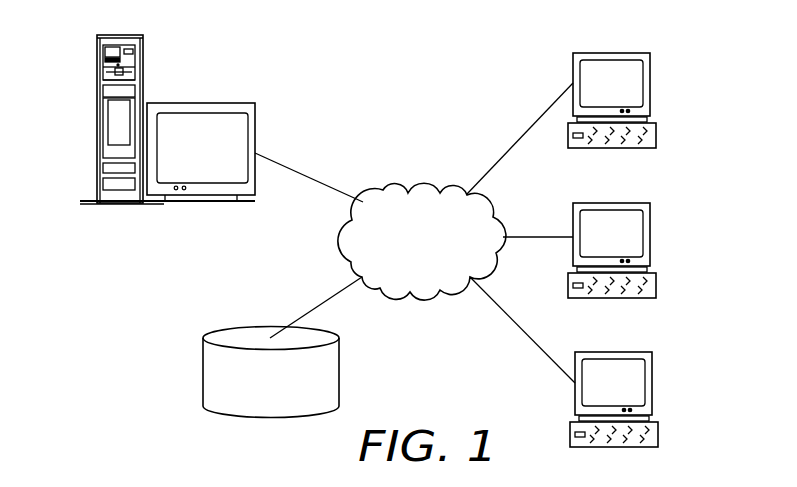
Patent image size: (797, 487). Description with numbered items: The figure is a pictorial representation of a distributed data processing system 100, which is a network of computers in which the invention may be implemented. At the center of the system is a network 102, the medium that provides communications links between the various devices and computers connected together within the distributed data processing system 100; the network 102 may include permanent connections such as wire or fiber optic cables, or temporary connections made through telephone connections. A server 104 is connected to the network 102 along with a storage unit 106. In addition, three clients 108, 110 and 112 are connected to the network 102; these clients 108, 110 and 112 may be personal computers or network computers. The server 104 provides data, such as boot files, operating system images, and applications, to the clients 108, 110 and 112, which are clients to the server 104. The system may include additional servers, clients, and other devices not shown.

The distributed data processing system 100 is at (476, 65).
The network 102 is at (393, 186).
The server 104 is at (97, 122).
The storage unit 106 is at (203, 371).
The client 108 is at (650, 83).
The client 110 is at (650, 233).
The client 112 is at (650, 383).